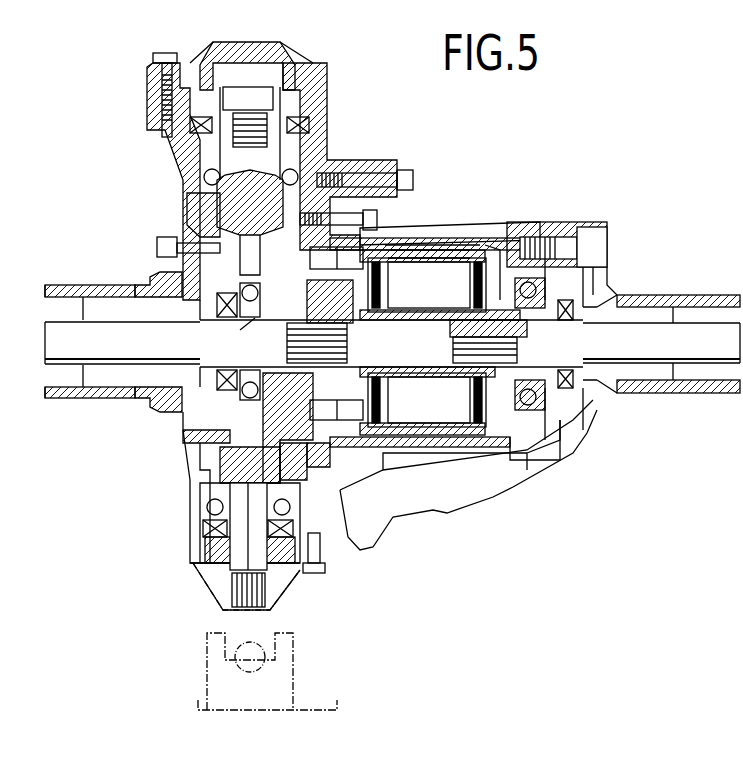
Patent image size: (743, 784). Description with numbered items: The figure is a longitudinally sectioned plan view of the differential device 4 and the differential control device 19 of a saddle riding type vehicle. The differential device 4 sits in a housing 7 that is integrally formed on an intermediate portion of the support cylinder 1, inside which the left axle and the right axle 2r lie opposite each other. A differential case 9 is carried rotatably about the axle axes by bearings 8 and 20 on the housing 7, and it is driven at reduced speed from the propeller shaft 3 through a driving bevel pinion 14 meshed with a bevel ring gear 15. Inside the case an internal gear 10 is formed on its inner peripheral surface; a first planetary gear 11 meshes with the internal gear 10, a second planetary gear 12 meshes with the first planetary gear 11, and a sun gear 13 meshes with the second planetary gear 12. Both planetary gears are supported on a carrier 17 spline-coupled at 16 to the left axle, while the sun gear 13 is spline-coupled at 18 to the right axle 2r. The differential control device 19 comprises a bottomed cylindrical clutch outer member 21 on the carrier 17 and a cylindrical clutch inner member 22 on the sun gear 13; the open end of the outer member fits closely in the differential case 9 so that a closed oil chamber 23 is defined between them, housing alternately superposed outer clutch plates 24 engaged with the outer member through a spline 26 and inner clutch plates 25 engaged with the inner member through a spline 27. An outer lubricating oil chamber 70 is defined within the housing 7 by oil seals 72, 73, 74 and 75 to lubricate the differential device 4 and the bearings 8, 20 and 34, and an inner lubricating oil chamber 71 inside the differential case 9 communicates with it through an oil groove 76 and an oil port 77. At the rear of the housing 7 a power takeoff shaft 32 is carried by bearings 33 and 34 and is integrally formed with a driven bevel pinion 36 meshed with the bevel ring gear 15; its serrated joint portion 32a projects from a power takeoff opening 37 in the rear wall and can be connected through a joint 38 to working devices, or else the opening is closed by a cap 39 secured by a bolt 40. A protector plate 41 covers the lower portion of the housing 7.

The support cylinder 1 is at (52, 292).
The right axle 2r is at (705, 330).
The propeller shaft 3 is at (222, 152).
The differential device 4 is at (376, 445).
The housing 7 is at (322, 166).
The bearing 8 is at (240, 292).
The differential case 9 is at (300, 392).
The internal gear 10 is at (336, 262).
The first planetary gear 11 is at (351, 262).
The second planetary gear 12 is at (336, 410).
The sun gear 13 is at (348, 410).
The driving bevel pinion 14 is at (210, 217).
The bevel ring gear 15 is at (300, 240).
The spline 16 is at (292, 327).
The carrier 17 is at (275, 320).
The spline 18 is at (512, 325).
The differential control device 19 is at (450, 258).
The bearing 20 is at (515, 300).
The clutch outer member 21 is at (56, 330).
The clutch inner member 22 is at (416, 320).
The closed oil chamber 23 is at (436, 413).
The outer clutch plates 24 is at (350, 227).
The inner clutch plates 25 is at (381, 312).
The spline 26 is at (422, 279).
The spline 27 is at (445, 312).
The power takeoff shaft 32 is at (232, 575).
The joint portion 32a is at (235, 597).
The bearing 33 is at (205, 440).
The bearing 34 is at (207, 507).
The driven bevel pinion 36 is at (215, 463).
The power takeoff opening 37 is at (193, 564).
The joint 38 is at (292, 648).
The cap 39 is at (295, 598).
The bolt 40 is at (322, 572).
The protector plate 41 is at (410, 515).
The outer lubricating oil chamber 70 is at (437, 250).
The inner lubricating oil chamber 71 is at (400, 240).
The oil seal 72 is at (237, 378).
The oil seal 73 is at (562, 320).
The oil seal 74 is at (205, 120).
The oil seal 75 is at (240, 562).
The oil groove 76 is at (243, 333).
The oil port 77 is at (420, 246).